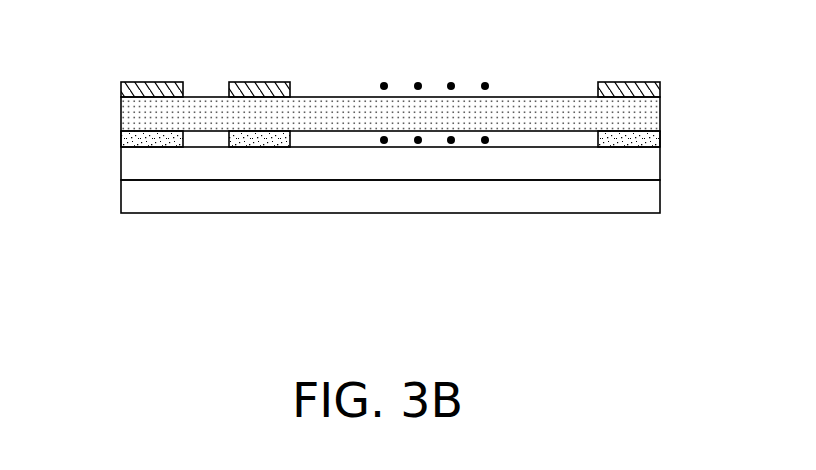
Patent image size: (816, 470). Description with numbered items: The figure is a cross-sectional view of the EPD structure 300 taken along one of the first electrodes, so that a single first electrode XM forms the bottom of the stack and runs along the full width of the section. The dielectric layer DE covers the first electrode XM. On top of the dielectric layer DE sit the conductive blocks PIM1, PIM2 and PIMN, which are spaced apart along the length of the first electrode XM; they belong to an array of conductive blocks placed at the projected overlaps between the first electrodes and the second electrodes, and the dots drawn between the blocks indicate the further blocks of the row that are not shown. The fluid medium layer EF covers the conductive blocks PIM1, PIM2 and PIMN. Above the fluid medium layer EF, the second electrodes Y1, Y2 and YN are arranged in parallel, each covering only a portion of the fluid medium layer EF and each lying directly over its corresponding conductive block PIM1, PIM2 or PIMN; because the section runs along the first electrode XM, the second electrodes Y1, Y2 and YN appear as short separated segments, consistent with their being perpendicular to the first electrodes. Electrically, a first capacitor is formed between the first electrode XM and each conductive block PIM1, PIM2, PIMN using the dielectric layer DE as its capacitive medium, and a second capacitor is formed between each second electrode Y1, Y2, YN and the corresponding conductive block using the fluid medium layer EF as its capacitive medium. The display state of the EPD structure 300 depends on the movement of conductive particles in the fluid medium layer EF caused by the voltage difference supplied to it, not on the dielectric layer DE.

The EPD structure 300 is at (667, 322).
The second electrode Y1 is at (148, 82).
The second electrode Y2 is at (252, 82).
The second electrode YN is at (627, 82).
The fluid medium layer EF is at (130, 120).
The conductive block PIM1 is at (130, 133).
The conductive block PIM2 is at (258, 141).
The conductive block PIMN is at (632, 141).
The dielectric layer DE is at (130, 162).
The first electrode XM is at (392, 202).